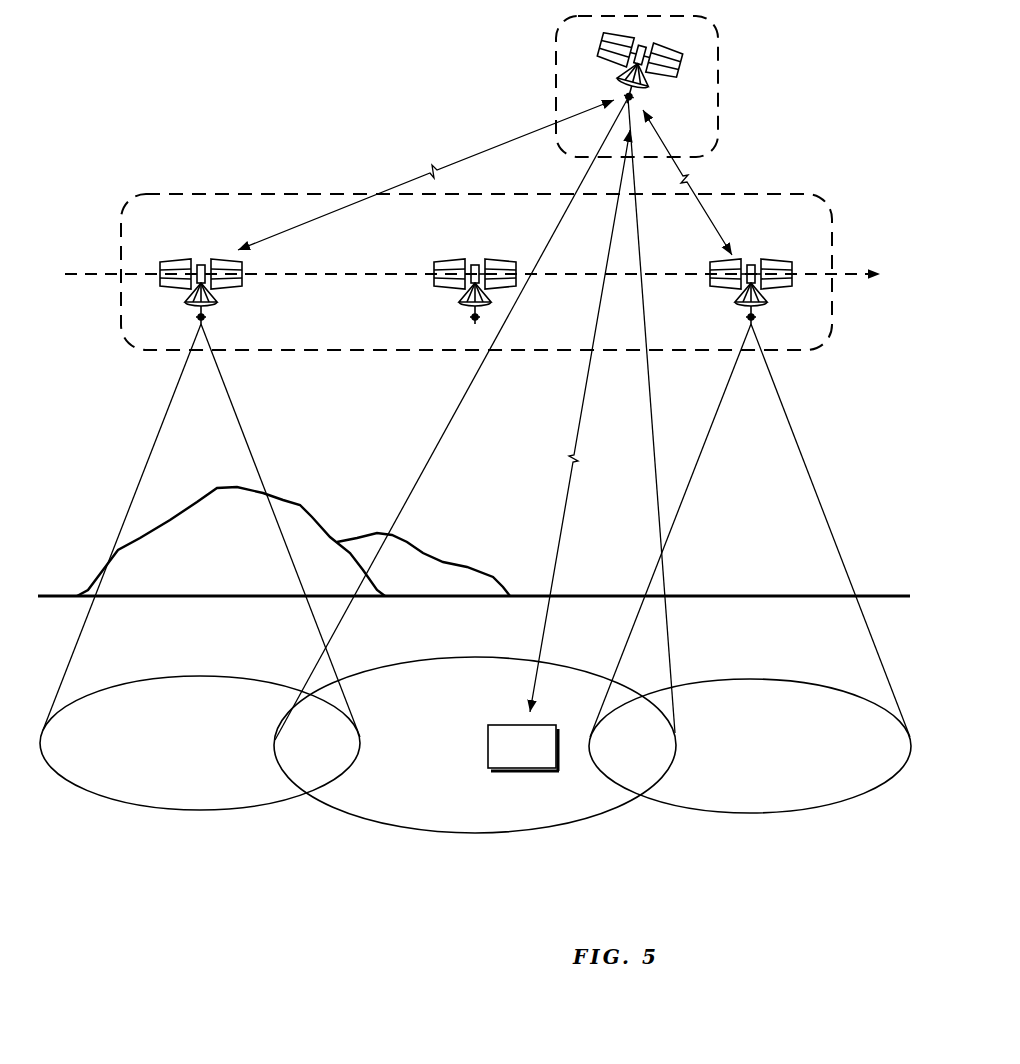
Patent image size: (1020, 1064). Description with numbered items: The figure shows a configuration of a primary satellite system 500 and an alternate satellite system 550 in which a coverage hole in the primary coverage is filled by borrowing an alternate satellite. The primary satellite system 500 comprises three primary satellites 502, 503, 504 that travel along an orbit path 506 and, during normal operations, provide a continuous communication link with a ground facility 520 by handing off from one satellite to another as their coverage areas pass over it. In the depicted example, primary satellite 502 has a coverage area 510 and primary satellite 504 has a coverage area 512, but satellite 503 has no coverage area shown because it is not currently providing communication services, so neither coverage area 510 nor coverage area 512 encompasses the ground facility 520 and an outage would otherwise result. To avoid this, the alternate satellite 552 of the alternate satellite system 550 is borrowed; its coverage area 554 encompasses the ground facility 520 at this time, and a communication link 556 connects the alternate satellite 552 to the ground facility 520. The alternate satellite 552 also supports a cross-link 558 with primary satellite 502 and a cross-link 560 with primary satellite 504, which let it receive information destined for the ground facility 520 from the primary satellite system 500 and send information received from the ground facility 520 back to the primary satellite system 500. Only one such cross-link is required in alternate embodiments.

The primary satellite system 500 is at (268, 193).
The primary satellite 502 is at (757, 255).
The satellite 503 is at (471, 255).
The primary satellite 504 is at (198, 255).
The orbit path 506 is at (863, 282).
The coverage area 510 is at (772, 814).
The coverage area 512 is at (145, 808).
The ground facility 520 is at (523, 748).
The alternate satellite system 550 is at (555, 66).
The alternate satellite 552 is at (663, 78).
The coverage area 554 is at (440, 831).
The communication link 556 is at (558, 517).
The cross-link 558 is at (704, 217).
The cross-link 560 is at (505, 143).